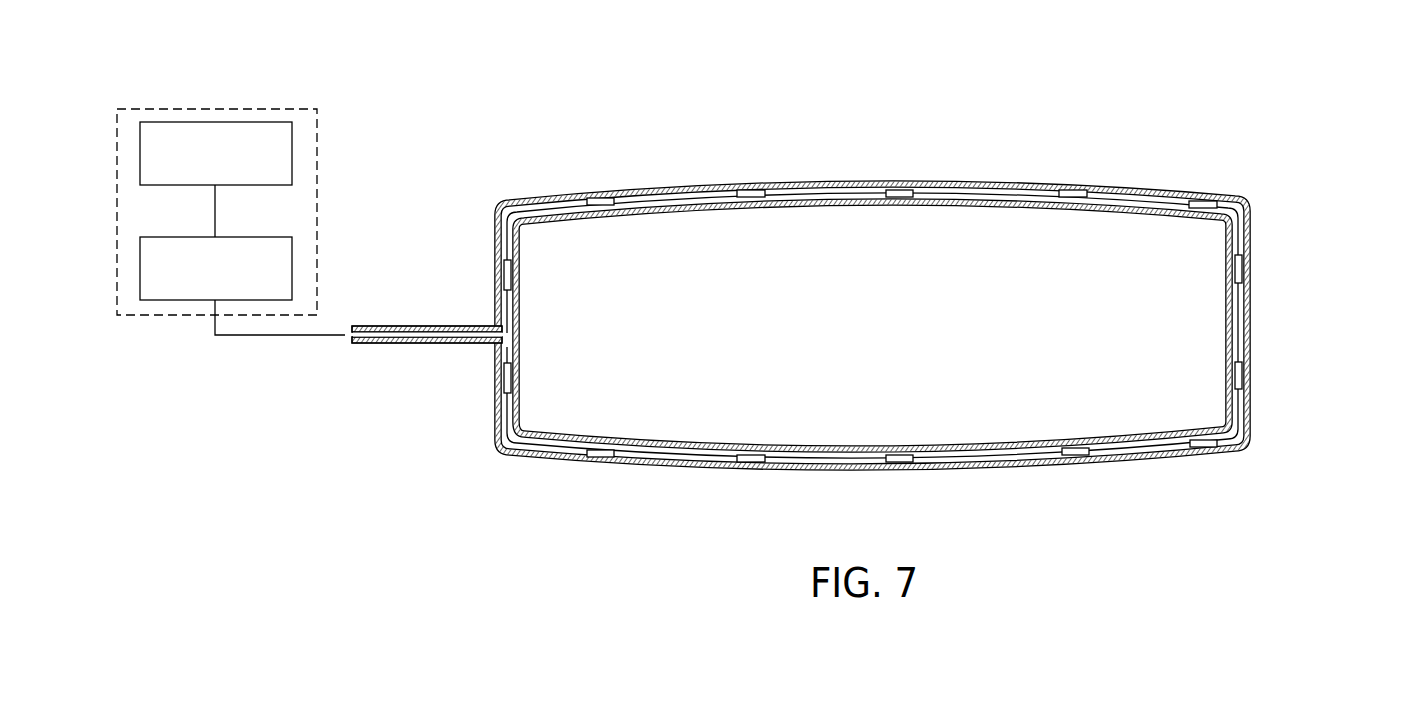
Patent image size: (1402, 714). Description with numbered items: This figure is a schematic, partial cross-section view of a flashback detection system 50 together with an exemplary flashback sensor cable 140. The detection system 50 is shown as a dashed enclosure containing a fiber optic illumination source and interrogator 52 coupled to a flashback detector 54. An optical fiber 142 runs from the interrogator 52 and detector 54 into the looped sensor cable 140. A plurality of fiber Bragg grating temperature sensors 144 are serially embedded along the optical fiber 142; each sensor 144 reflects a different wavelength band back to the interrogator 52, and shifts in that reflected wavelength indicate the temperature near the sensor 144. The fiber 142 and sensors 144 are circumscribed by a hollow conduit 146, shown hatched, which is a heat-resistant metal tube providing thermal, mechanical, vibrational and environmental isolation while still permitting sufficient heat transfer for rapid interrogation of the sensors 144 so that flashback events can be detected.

The flashback detection system 50 is at (211, 84).
The fiber optic illumination source and interrogator 52 is at (171, 288).
The flashback detector 54 is at (278, 135).
The flashback sensor cable 140 is at (930, 287).
The optical fiber 142 is at (346, 326).
The fiber Bragg grating temperature sensors 144 is at (602, 205).
The hollow conduit 146 is at (1252, 275).